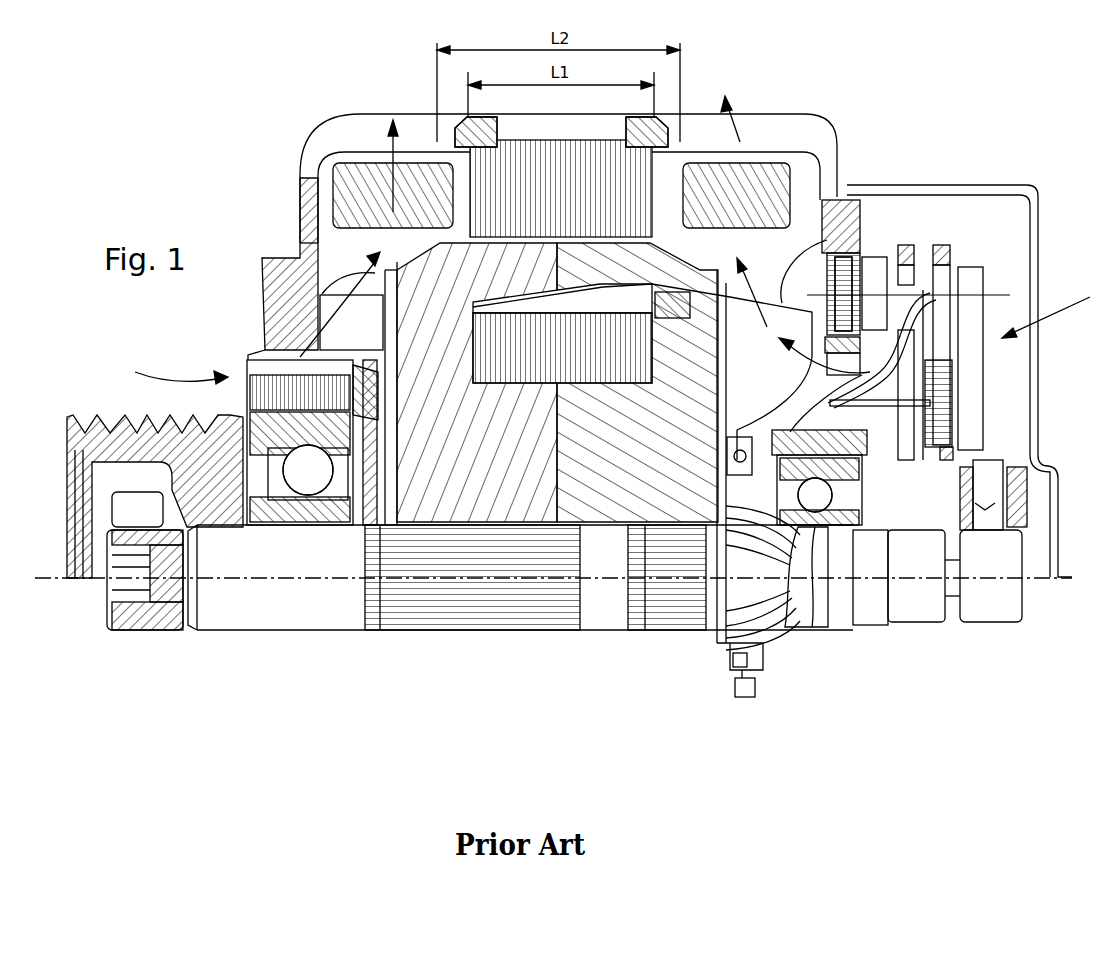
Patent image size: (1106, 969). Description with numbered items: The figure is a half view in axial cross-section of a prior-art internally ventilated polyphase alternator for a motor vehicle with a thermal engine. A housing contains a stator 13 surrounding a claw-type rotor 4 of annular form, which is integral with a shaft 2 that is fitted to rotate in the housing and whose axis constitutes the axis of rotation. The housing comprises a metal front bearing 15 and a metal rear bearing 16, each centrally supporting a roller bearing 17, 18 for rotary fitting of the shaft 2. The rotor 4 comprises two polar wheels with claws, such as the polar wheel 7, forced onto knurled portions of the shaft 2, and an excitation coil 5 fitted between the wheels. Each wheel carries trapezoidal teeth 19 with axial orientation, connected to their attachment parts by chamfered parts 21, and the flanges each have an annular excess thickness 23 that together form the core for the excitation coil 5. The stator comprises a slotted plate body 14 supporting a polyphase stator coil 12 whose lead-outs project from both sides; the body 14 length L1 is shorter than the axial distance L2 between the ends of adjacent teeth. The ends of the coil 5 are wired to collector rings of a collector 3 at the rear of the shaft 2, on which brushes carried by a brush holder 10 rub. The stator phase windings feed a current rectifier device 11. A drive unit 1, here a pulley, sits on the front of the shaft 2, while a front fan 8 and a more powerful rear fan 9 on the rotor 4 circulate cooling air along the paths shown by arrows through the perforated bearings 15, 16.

The drive unit 1 is at (112, 412).
The shaft 2 is at (334, 632).
The collector 3 is at (928, 630).
The rotor 4 is at (490, 500).
The excitation coil 5 is at (738, 252).
The polar wheel 7 is at (663, 487).
The front fan 8 is at (330, 300).
The rear fan 9 is at (860, 252).
The brush holder 10 is at (1015, 460).
The current rectifier device 11 is at (917, 238).
The polyphase stator coil 12 is at (745, 162).
The stator 13 is at (515, 137).
The body 14 is at (591, 147).
The front bearing 15 is at (302, 210).
The rear bearing 16 is at (838, 192).
The roller bearing 17 is at (276, 540).
The roller bearing 18 is at (826, 533).
The teeth 19 is at (559, 285).
The chamfered parts 21 is at (695, 178).
The annular excess thickness 23 is at (527, 488).